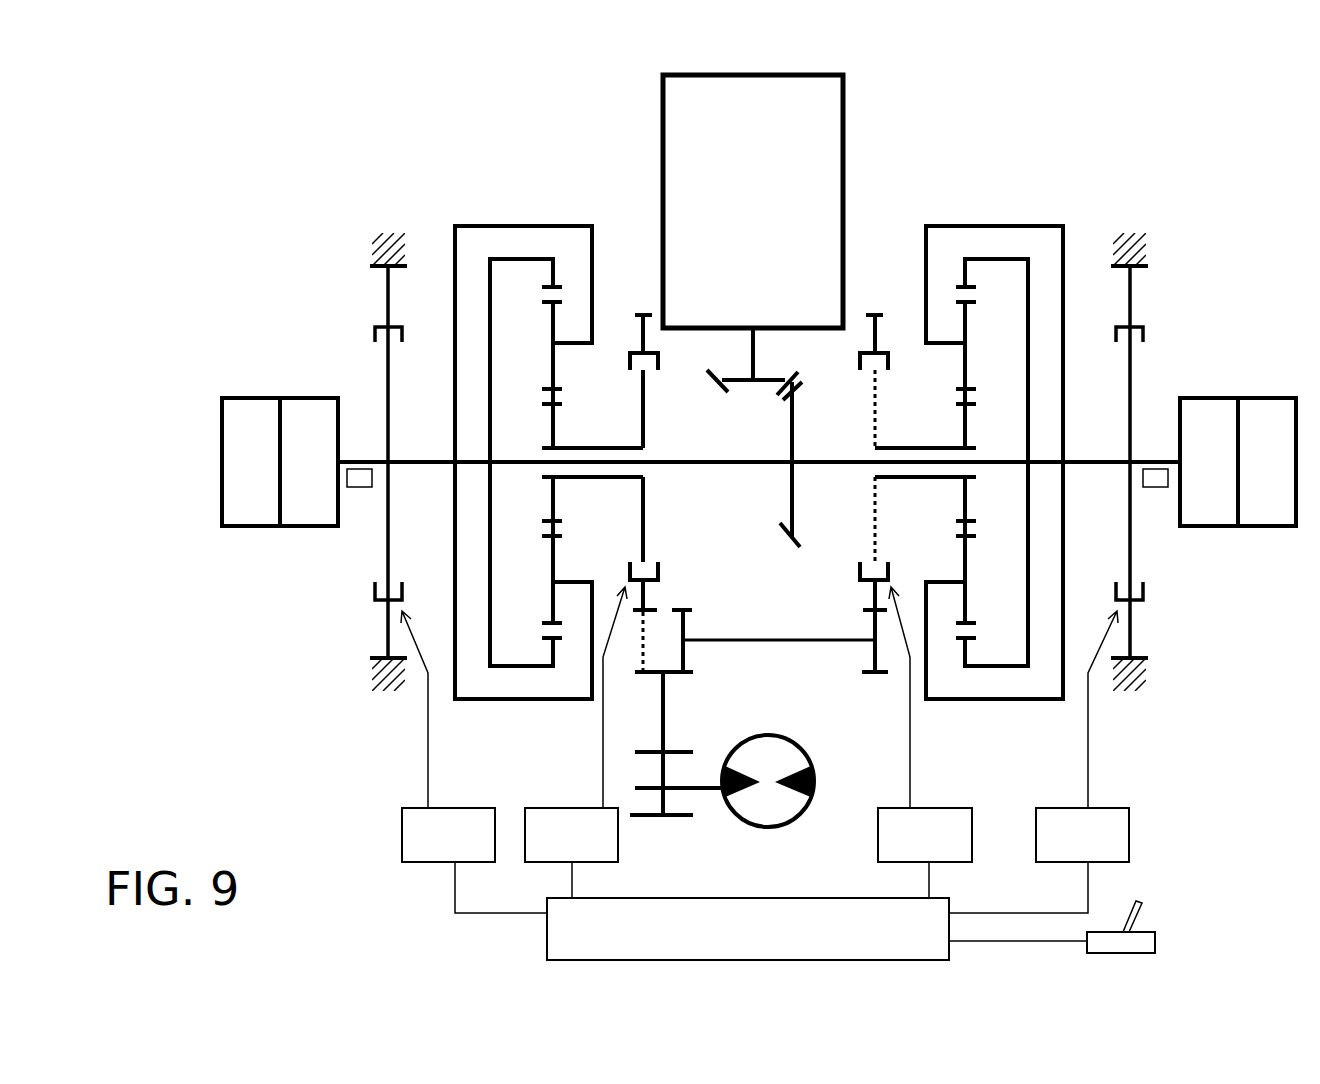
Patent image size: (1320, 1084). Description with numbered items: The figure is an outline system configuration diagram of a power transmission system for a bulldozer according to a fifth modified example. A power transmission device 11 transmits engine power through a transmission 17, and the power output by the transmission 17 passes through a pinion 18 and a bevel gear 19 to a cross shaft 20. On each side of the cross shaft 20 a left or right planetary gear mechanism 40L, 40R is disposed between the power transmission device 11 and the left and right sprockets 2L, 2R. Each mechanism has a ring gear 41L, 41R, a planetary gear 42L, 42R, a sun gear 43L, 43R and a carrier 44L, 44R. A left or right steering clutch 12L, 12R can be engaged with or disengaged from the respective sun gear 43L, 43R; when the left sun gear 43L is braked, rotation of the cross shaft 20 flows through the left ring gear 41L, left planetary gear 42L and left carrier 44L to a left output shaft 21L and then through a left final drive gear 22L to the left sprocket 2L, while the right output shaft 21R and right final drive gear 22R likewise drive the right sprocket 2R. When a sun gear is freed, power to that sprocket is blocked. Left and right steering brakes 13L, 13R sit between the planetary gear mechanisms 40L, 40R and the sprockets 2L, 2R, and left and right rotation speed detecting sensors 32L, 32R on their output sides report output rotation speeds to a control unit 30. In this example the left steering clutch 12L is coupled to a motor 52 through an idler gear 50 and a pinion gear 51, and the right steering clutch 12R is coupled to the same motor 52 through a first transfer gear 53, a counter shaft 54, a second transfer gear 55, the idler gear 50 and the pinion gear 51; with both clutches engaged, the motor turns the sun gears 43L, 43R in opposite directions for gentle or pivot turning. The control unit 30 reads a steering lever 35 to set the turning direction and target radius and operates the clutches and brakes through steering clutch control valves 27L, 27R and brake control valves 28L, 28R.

The power transmission device 11 is at (589, 97).
The transmission 17 is at (843, 95).
The pinion 18 is at (770, 378).
The bevel gear 19 is at (795, 492).
The cross shaft 20 is at (740, 462).
The left sprocket 2L is at (245, 528).
The right sprocket 2R is at (1270, 528).
The left final drive gear 22L is at (307, 528).
The right final drive gear 22R is at (1207, 528).
The left output shaft 21L is at (423, 462).
The right output shaft 21R is at (1095, 462).
The left steering brake 13L is at (375, 336).
The right steering brake 13R is at (1145, 335).
The left rotation speed detecting sensor 32L is at (360, 487).
The right rotation speed detecting sensor 32R is at (1157, 487).
The left planetary gear mechanism 40L is at (465, 203).
The right planetary gear mechanism 40R is at (1055, 200).
The left carrier 44L is at (513, 226).
The right carrier 44R is at (1003, 226).
The left ring gear 41L is at (555, 270).
The right ring gear 41R is at (957, 275).
The left planetary gear 42L is at (547, 325).
The right planetary gear 42R is at (967, 325).
The left sun gear 43L is at (605, 448).
The right sun gear 43R is at (920, 448).
The left steering clutch 12L is at (630, 363).
The right steering clutch 12R is at (885, 363).
The second transfer gear 55 is at (686, 630).
The counter shaft 54 is at (765, 640).
The first transfer gear 53 is at (868, 655).
The idler gear 50 is at (663, 702).
The pinion gear 51 is at (668, 820).
The motor 52 is at (755, 830).
The left steering clutch control valve 27L is at (576, 724).
The right steering clutch control valve 27R is at (925, 724).
The left brake control valve 28L is at (448, 736).
The right brake control valve 28R is at (1082, 736).
The control unit 30 is at (838, 898).
The steering lever 35 is at (1155, 938).